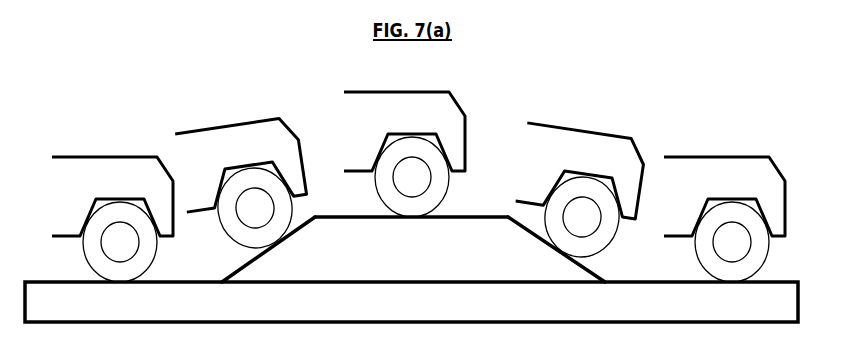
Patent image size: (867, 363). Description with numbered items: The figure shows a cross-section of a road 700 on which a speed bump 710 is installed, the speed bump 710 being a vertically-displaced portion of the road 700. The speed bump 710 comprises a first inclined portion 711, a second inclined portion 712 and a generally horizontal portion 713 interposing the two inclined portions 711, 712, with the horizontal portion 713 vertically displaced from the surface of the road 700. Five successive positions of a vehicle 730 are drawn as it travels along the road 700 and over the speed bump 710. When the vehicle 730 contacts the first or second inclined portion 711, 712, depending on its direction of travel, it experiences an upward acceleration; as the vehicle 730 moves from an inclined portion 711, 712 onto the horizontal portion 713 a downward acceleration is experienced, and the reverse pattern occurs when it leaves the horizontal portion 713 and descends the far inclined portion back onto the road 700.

The road 700 is at (411, 302).
The speed bump 710 is at (413, 260).
The first inclined portion 711 is at (268, 249).
The second inclined portion 712 is at (556, 249).
The horizontal portion 713 is at (411, 231).
The vehicle 730 is at (418, 187).